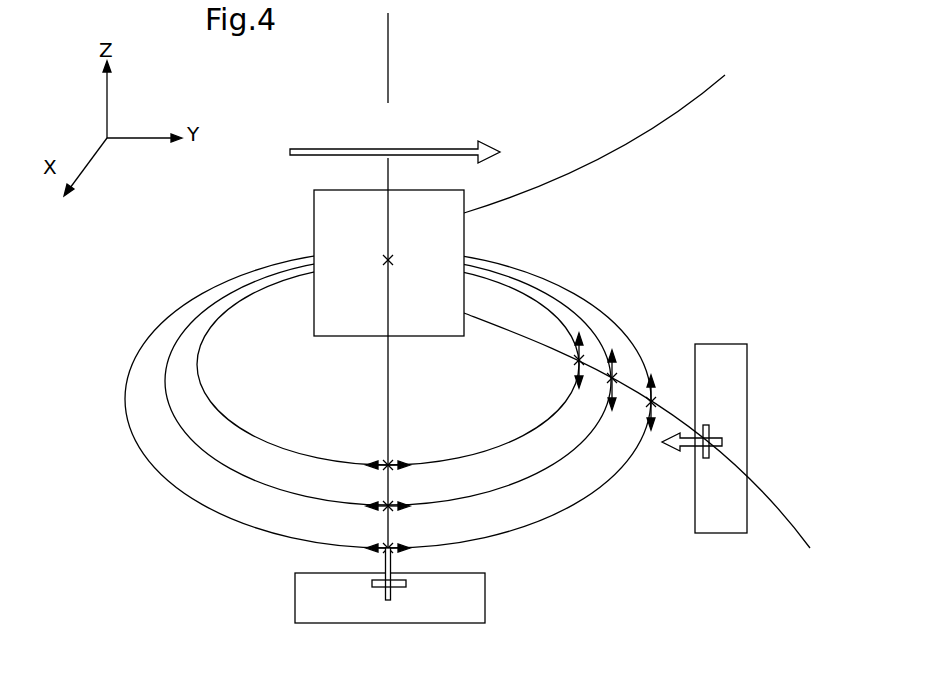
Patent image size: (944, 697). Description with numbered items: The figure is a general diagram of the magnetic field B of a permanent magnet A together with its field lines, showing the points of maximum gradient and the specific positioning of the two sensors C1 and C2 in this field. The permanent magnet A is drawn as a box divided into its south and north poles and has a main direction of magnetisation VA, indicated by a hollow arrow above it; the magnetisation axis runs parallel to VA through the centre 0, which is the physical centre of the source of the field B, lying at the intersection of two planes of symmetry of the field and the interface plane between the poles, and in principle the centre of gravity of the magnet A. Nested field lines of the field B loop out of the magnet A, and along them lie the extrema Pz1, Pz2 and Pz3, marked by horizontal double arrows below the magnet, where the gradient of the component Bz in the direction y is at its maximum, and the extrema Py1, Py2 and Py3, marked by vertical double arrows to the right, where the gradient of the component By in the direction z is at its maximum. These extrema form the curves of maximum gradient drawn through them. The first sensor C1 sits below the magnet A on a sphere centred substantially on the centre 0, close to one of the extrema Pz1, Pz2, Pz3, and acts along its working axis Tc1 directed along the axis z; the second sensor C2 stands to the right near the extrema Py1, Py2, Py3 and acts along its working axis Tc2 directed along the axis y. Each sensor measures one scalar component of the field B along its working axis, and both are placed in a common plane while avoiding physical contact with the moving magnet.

The permanent magnet A is at (325, 219).
The magnetic field B is at (388, 399).
The centre 0 is at (395, 276).
The first sensor C1 is at (292, 601).
The second sensor C2 is at (747, 387).
The working axis of the sensor C1 Tc1 is at (393, 562).
The working axis of the sensor C2 Tc2 is at (690, 451).
The extremum Py1 is at (578, 361).
The extremum Py2 is at (615, 377).
The extremum Py3 is at (653, 401).
The extremum Pz1 is at (388, 462).
The extremum Pz2 is at (388, 503).
The extremum Pz3 is at (388, 545).
The main direction of magnetisation VA is at (395, 140).